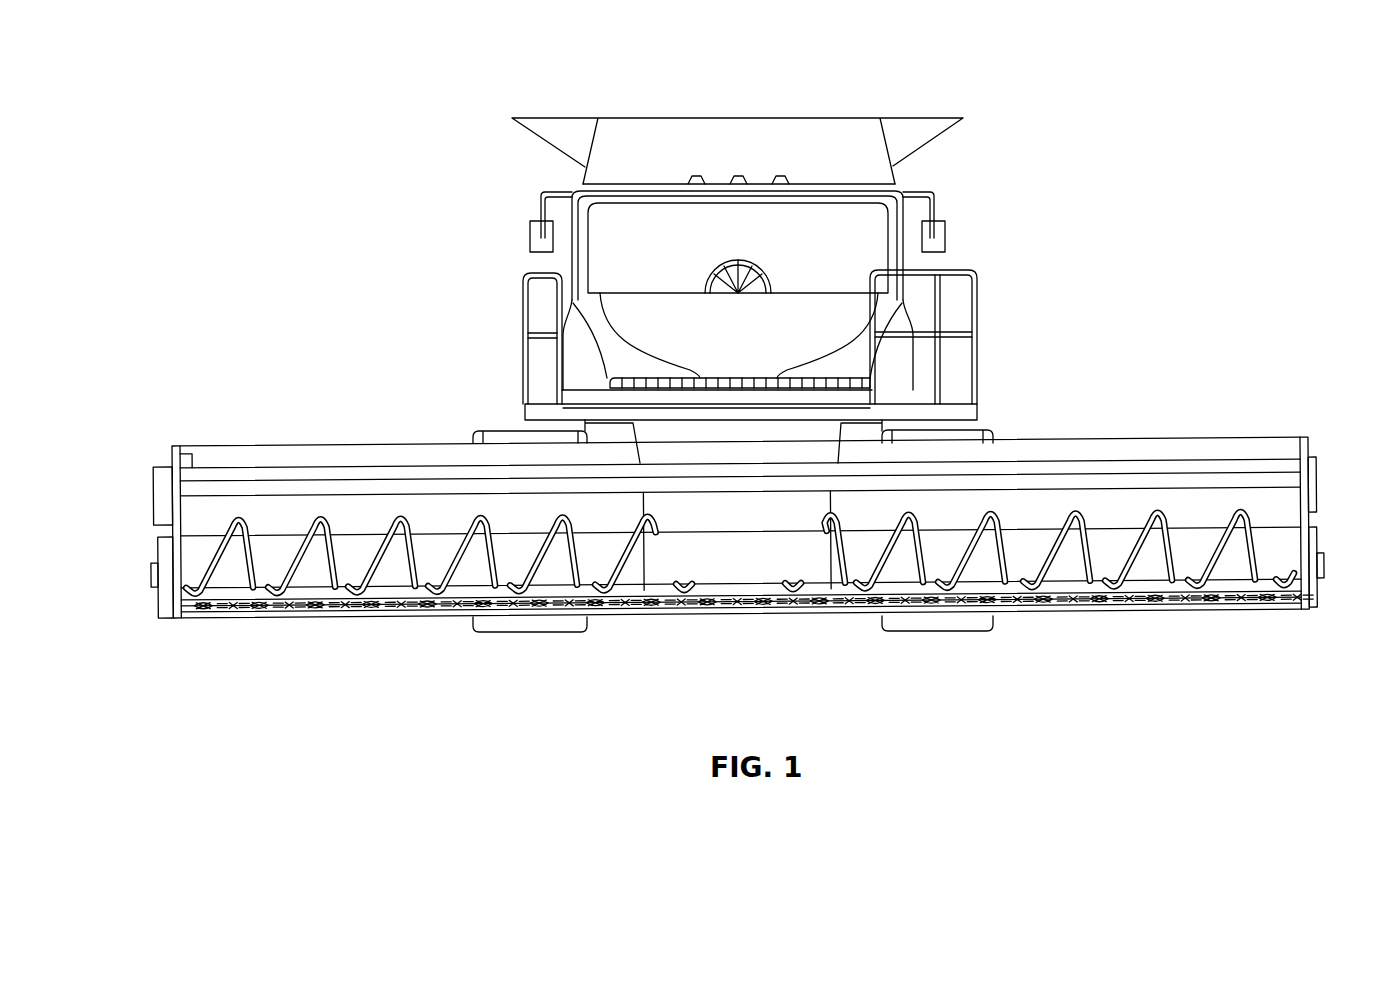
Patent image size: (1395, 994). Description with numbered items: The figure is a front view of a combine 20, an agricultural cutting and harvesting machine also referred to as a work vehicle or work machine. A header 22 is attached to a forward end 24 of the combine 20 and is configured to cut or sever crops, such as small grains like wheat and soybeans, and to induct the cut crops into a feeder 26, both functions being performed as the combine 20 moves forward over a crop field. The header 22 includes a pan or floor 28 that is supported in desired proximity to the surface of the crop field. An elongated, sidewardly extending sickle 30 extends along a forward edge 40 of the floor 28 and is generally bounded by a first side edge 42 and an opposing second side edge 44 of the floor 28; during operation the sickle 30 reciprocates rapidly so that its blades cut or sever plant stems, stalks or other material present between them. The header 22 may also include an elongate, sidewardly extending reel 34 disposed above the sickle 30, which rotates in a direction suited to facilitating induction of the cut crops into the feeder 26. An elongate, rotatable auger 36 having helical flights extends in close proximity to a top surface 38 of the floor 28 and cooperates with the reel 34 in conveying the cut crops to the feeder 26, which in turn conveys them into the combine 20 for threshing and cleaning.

The combine 20 is at (330, 122).
The header 22 is at (146, 485).
The forward end 24 is at (532, 415).
The feeder 26 is at (842, 449).
The floor 28 is at (328, 593).
The sickle 30 is at (1166, 606).
The reel 34 is at (1310, 443).
The auger 36 is at (1263, 527).
The top surface 38 is at (243, 593).
The forward edge 40 is at (397, 598).
The first side edge 42 is at (170, 592).
The second side edge 44 is at (1315, 588).